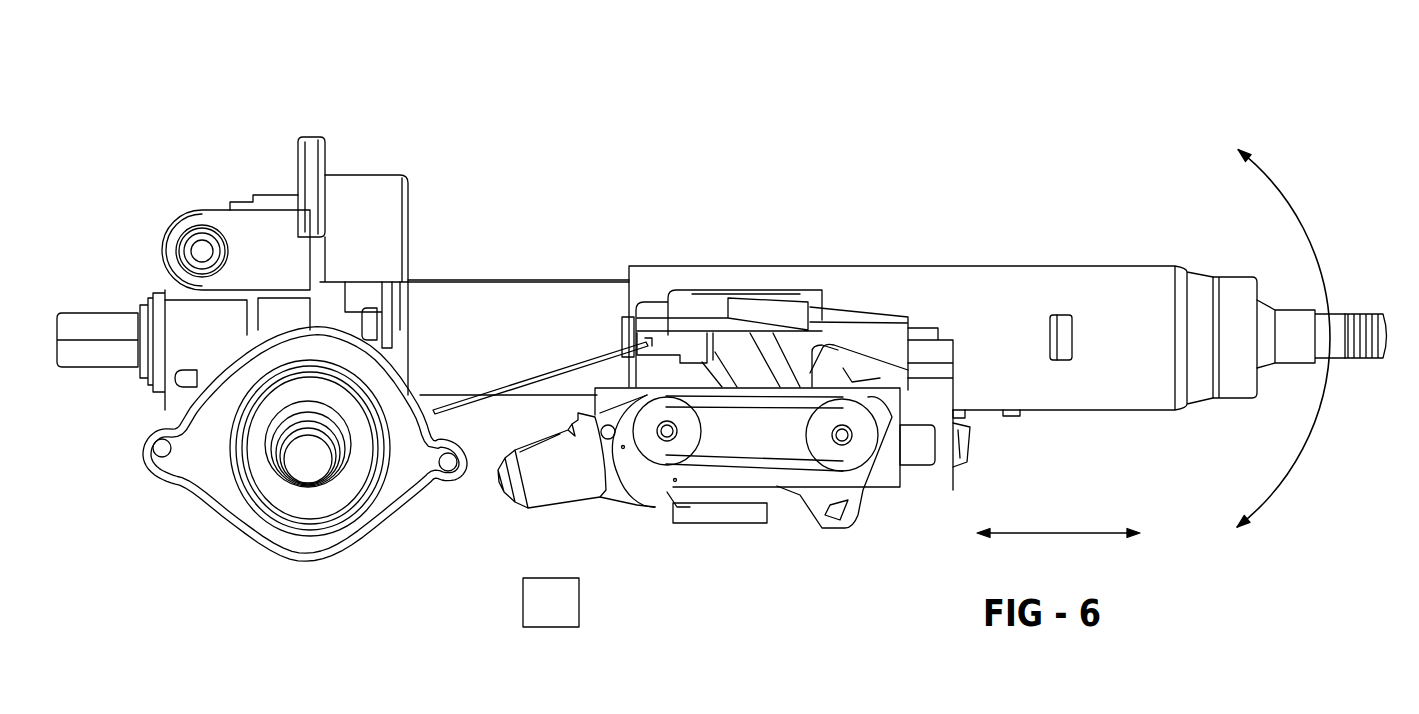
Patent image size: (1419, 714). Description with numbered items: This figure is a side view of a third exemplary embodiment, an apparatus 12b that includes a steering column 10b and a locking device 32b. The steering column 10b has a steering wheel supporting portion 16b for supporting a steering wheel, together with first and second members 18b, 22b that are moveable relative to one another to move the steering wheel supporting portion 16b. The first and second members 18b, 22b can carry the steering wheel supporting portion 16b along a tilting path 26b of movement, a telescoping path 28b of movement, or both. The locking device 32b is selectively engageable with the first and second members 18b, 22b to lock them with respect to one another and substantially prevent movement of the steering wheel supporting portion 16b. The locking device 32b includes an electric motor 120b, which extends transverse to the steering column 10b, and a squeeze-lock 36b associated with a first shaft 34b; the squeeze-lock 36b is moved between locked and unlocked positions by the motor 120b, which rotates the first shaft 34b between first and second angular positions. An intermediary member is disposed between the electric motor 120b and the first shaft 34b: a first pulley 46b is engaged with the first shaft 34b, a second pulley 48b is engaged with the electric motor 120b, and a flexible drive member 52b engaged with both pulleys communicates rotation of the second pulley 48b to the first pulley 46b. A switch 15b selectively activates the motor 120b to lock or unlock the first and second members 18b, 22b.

The steering column 10b is at (710, 118).
The apparatus 12b is at (872, 152).
The switch 15b is at (551, 483).
The steering wheel supporting portion 16b is at (1364, 380).
The first member 18b is at (1152, 283).
The second member 22b is at (485, 300).
The tilting path 26b is at (1307, 447).
The telescoping path 28b is at (1065, 533).
The locking device 32b is at (795, 572).
The first shaft 34b is at (843, 426).
The squeeze-lock 36b is at (851, 562).
The first pulley 46b is at (852, 460).
The second pulley 48b is at (666, 452).
The flexible drive member 52b is at (778, 488).
The electric motor 120b is at (533, 476).